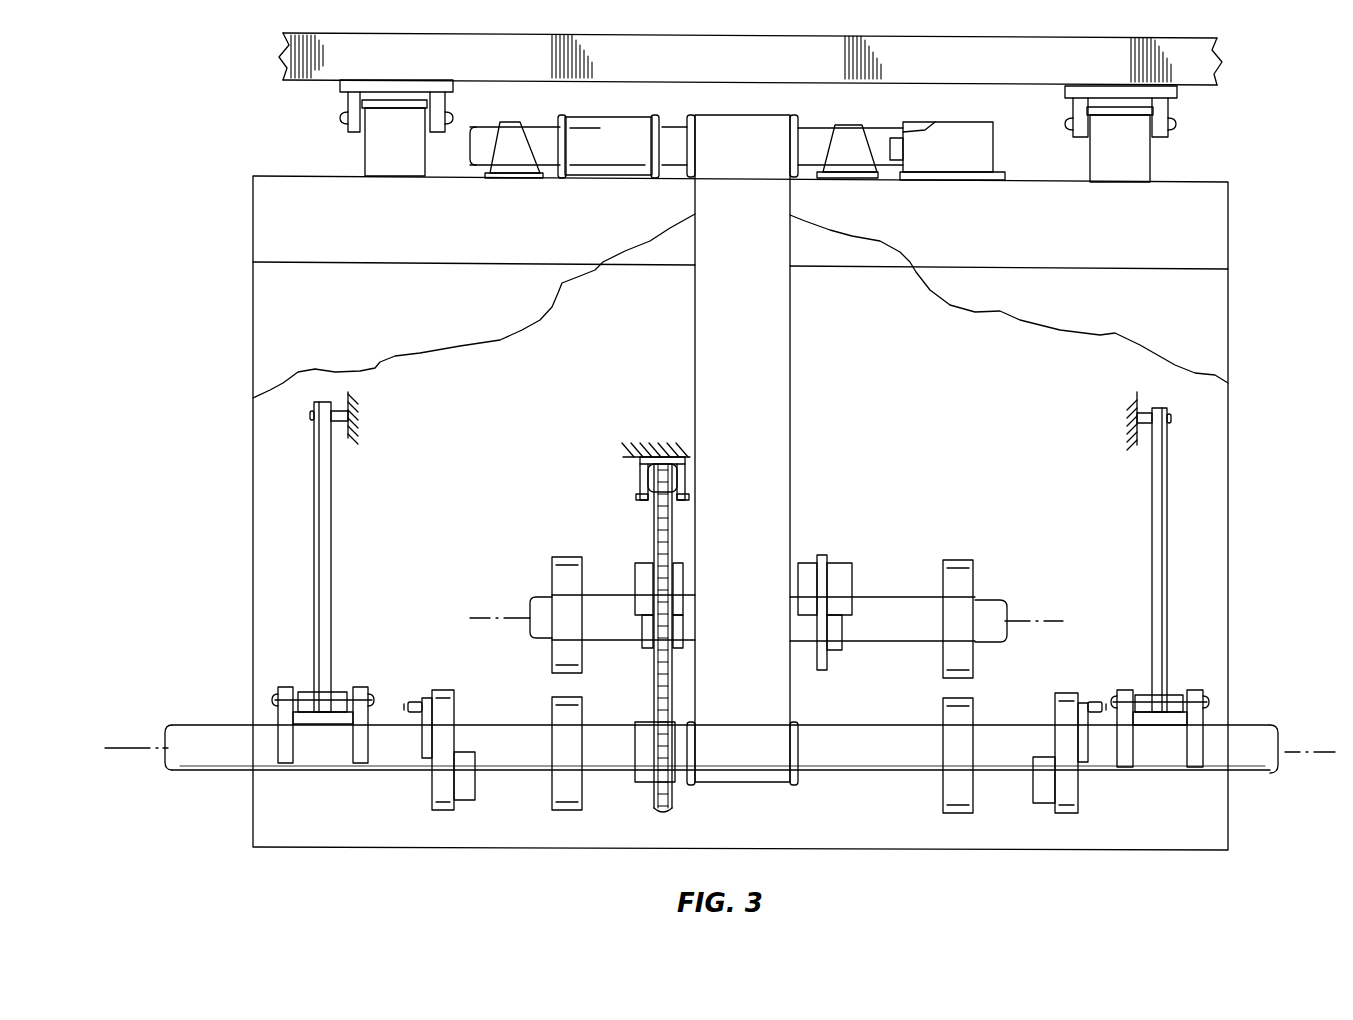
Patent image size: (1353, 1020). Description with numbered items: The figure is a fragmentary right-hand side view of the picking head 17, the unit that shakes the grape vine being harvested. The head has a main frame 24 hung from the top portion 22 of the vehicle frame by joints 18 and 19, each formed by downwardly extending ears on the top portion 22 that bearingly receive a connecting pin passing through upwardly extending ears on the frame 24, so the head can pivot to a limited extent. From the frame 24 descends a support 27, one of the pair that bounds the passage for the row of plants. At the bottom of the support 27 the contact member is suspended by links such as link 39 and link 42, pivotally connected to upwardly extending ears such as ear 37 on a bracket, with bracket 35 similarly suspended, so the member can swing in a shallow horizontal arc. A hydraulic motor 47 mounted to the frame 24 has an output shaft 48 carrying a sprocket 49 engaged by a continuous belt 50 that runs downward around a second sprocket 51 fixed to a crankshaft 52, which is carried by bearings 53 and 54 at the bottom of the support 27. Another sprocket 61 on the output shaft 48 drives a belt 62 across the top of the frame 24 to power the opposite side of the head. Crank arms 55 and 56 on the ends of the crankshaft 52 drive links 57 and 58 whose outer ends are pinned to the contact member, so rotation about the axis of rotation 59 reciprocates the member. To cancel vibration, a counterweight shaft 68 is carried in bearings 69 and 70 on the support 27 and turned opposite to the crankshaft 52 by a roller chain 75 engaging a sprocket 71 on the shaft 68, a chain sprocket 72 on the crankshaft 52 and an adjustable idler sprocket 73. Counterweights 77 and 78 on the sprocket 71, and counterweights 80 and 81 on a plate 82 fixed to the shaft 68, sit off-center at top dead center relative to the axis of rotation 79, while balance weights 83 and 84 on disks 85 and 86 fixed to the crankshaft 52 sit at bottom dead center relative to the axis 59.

The picking head 17 is at (1272, 180).
The joint 18 is at (1163, 112).
The joint 19 is at (350, 125).
The top portion of main frame 22 is at (1143, 50).
The main frame 24 is at (1215, 237).
The support 27 is at (268, 352).
The bracket 35 is at (1168, 757).
The ear 37 is at (293, 752).
The link 39 is at (320, 530).
The link 42 is at (1160, 512).
The hydraulic motor 47 is at (980, 142).
The output shaft 48 is at (822, 143).
The sprocket 49 is at (792, 120).
The belt 50 is at (770, 365).
The second sprocket 51 is at (797, 780).
The crankshaft 52 is at (877, 760).
The bearing 53 is at (570, 798).
The bearing 54 is at (958, 805).
The crank arm 55 is at (425, 703).
The crank arm 56 is at (1083, 700).
The link 57 is at (412, 704).
The link 58 is at (1097, 703).
The axis of rotation 59 is at (1305, 748).
The sprocket 61 is at (560, 120).
The belt 62 is at (610, 165).
The counterweight shaft 68 is at (912, 608).
The bearing 69 is at (568, 580).
The bearing 70 is at (952, 567).
The sprocket 71 is at (647, 650).
The chain sprocket 72 is at (668, 790).
The idler sprocket 73 is at (655, 500).
The roller chain 75 is at (675, 525).
The counterweight 77 is at (680, 573).
The counterweight 78 is at (640, 590).
The axis of rotation 79 is at (1040, 620).
The counterweight 80 is at (808, 568).
The counterweight 81 is at (842, 572).
The plate 82 is at (825, 670).
The balance weight 83 is at (460, 795).
The balance weight 84 is at (1045, 800).
The disk 85 is at (440, 790).
The disk 86 is at (1065, 805).